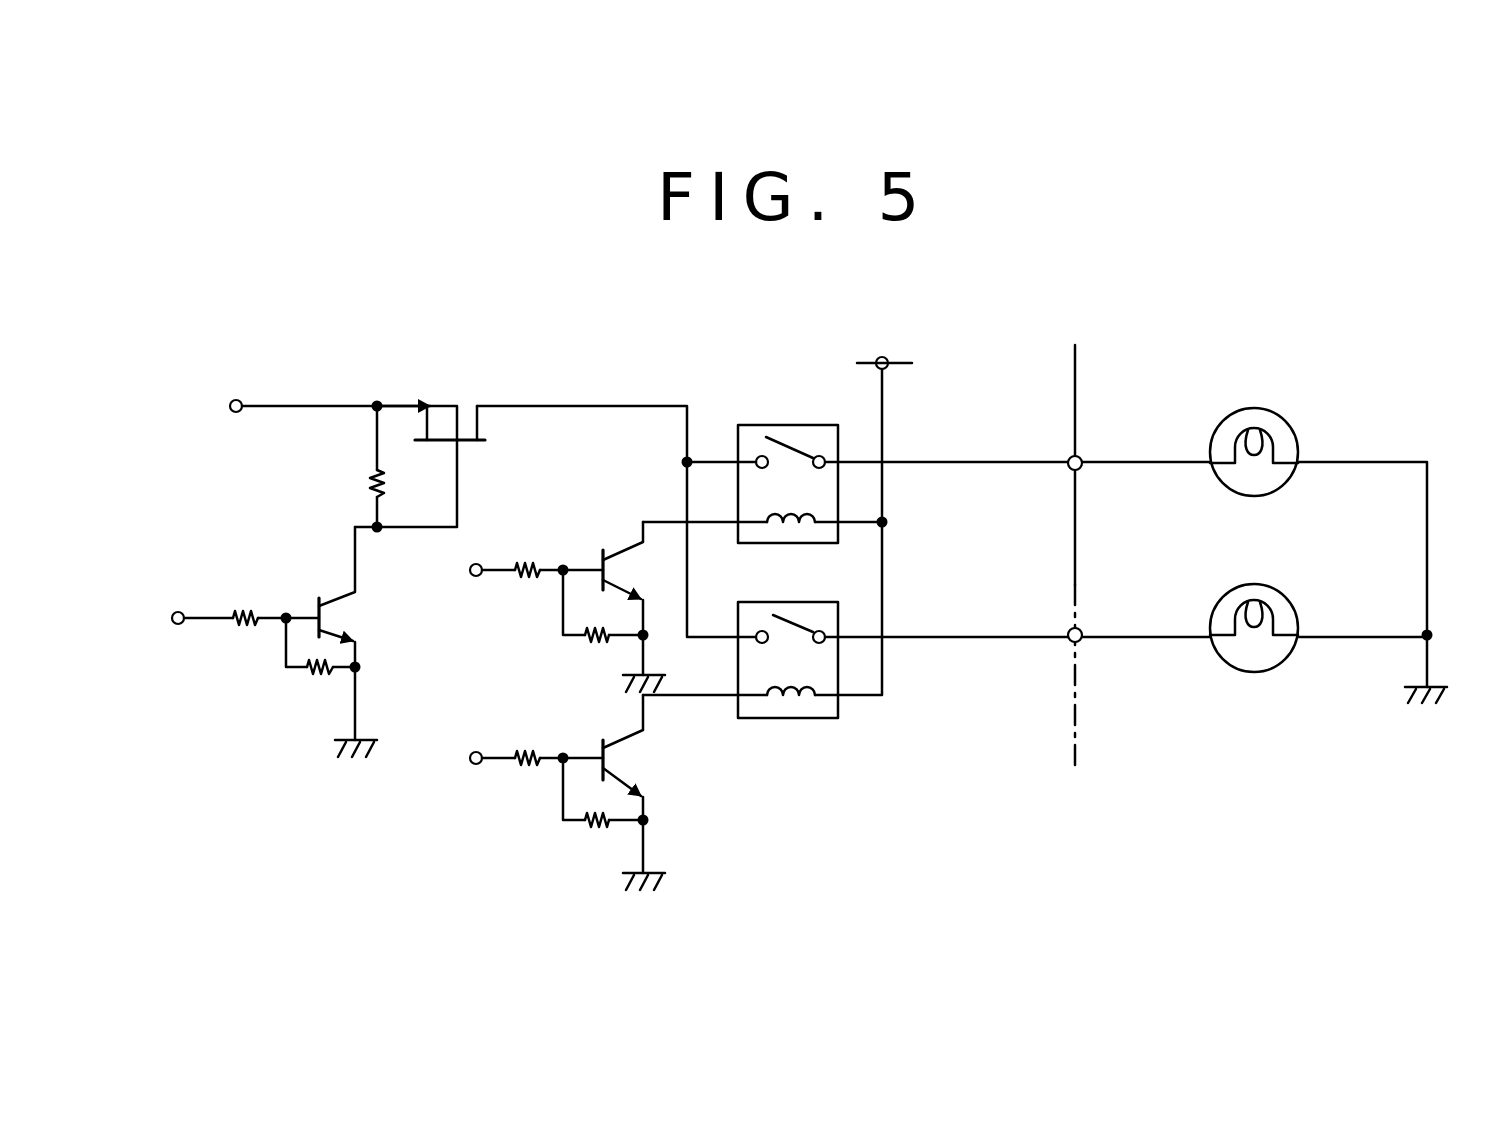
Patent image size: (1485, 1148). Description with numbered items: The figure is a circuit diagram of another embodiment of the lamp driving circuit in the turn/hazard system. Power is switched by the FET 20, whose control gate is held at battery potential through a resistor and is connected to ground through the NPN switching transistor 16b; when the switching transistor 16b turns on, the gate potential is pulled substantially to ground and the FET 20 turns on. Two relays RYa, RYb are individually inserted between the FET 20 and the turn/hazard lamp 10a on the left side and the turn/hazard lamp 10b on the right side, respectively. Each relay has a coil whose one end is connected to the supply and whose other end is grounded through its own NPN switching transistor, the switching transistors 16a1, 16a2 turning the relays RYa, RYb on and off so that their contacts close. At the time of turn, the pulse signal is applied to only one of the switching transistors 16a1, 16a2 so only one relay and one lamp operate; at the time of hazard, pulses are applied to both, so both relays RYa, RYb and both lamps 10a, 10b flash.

The FET 20 is at (432, 392).
The switching transistor 16b is at (327, 582).
The switching transistor 16a1 is at (615, 535).
The switching transistor 16a2 is at (612, 723).
The relay RYa is at (795, 440).
The relay RYb is at (812, 712).
The turn/hazard lamp 10a is at (1288, 420).
The turn/hazard lamp 10b is at (1280, 588).